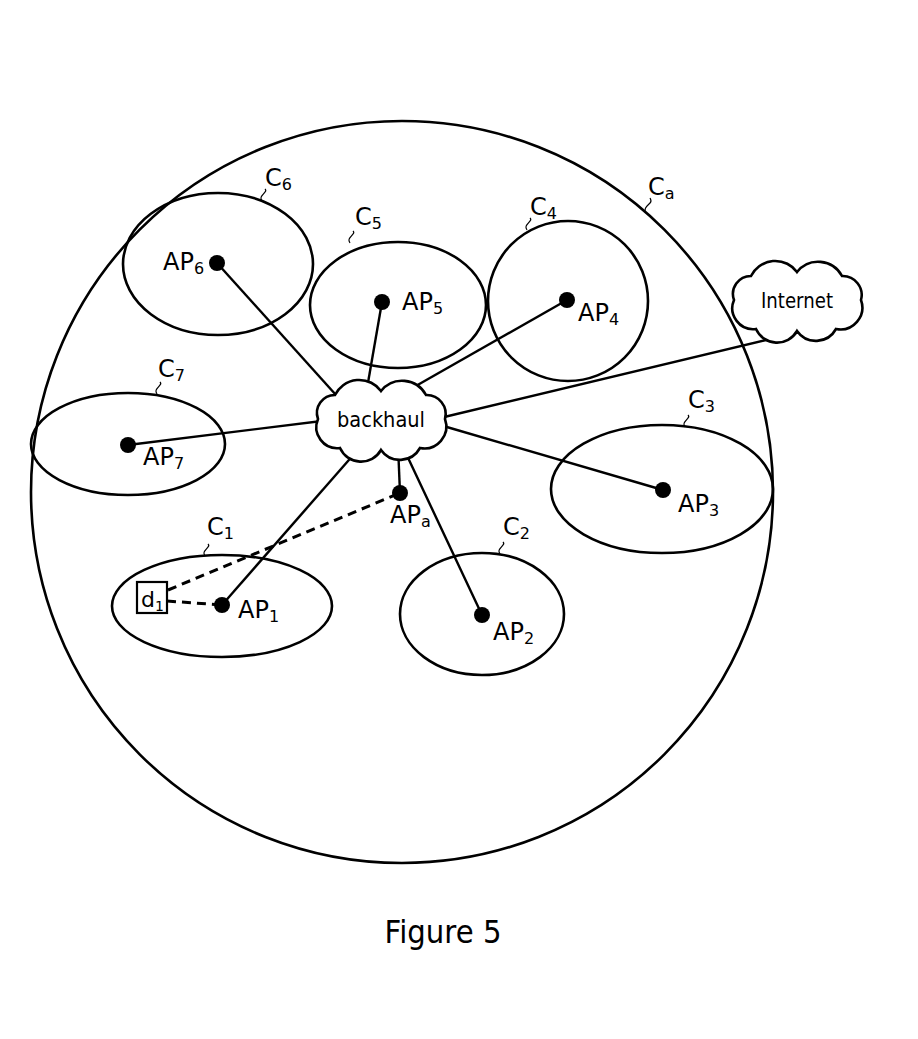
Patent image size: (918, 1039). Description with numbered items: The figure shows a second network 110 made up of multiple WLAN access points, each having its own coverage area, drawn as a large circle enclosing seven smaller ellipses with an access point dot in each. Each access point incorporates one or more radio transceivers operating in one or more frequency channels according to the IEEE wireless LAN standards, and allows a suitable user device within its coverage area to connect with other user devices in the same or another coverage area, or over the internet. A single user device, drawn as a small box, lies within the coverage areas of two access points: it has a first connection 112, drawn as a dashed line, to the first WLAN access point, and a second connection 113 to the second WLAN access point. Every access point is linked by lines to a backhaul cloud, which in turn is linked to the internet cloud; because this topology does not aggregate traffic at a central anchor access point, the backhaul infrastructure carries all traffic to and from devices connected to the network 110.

The second network 110 is at (670, 82).
The first connection 112 is at (343, 520).
The second connection 113 is at (194, 607).